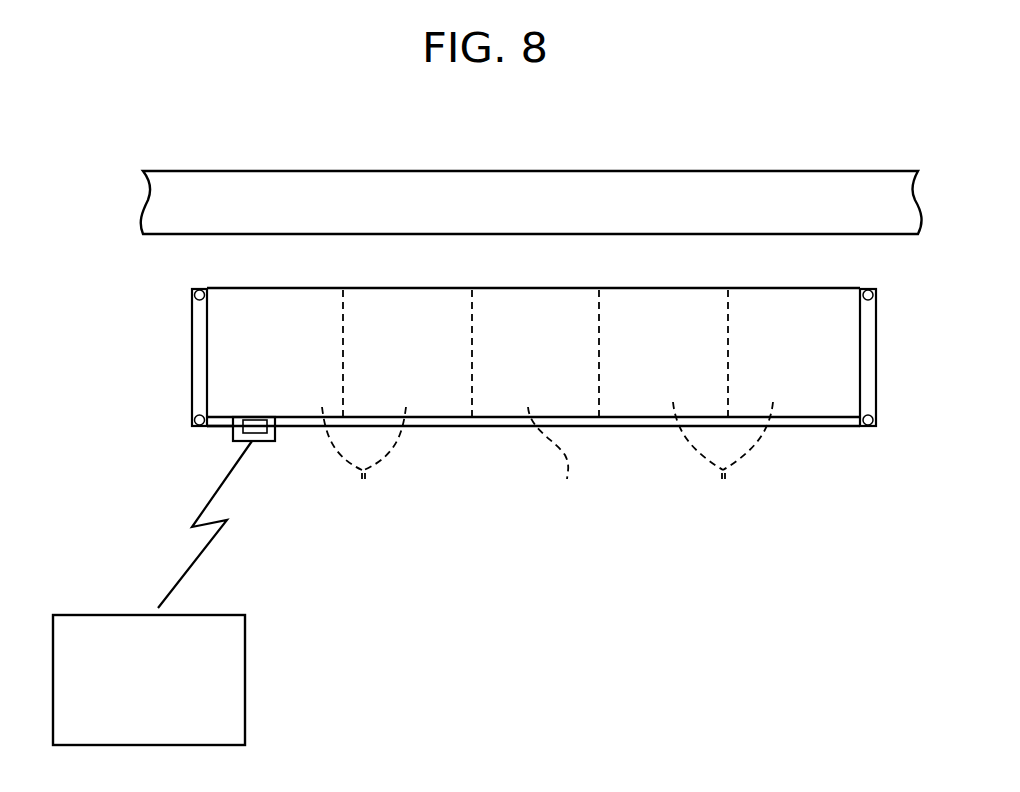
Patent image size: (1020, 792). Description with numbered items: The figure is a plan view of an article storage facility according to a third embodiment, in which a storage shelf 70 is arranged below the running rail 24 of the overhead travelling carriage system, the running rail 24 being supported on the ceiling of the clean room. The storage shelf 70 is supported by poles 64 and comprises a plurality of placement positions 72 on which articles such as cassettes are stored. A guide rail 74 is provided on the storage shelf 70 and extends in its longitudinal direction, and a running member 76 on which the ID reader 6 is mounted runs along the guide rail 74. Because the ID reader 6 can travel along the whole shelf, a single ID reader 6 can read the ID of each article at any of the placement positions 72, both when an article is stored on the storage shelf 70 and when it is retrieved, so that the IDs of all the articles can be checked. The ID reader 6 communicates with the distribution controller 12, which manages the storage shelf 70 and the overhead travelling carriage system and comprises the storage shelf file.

The running rail 24 is at (767, 171).
The storage shelf 70 is at (497, 428).
The pole 64 is at (192, 291).
The guide rail 74 is at (217, 428).
The ID reader 6 is at (262, 441).
The running member 76 is at (256, 441).
The distribution controller 12 is at (245, 677).
The placement positions 72 is at (547, 458).